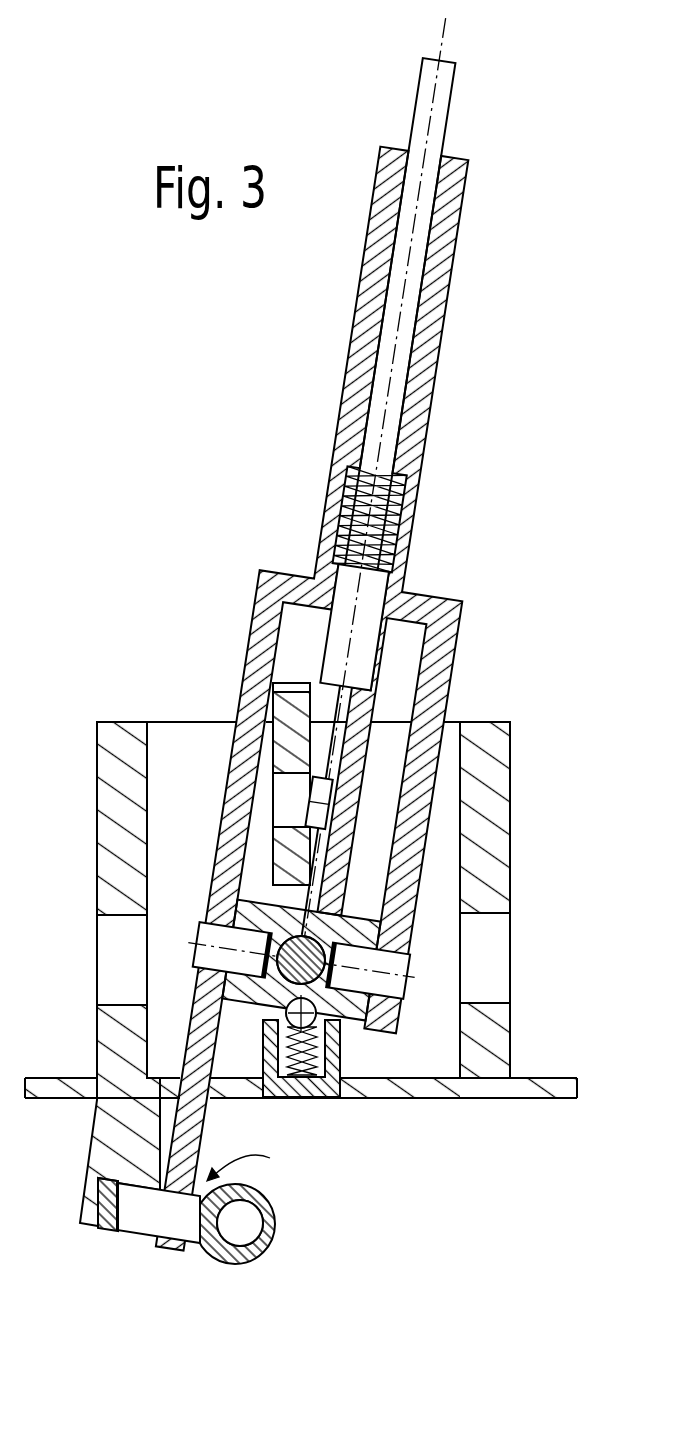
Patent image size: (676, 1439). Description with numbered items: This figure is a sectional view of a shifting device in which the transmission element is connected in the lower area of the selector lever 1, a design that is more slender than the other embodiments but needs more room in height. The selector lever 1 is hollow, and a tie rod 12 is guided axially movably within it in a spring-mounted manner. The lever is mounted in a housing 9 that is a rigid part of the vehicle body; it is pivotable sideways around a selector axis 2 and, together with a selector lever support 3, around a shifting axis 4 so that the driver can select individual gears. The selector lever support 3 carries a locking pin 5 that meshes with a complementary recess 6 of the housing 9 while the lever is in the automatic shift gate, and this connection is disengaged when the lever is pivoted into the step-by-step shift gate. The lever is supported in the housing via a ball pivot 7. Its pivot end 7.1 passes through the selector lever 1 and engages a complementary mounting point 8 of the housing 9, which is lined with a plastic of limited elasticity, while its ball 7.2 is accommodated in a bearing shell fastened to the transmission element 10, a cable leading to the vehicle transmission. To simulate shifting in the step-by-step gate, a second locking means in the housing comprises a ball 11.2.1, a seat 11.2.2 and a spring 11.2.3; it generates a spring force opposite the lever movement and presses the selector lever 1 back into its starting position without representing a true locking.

The selector lever 1 is at (428, 370).
The selector axis 2 is at (282, 980).
The selector lever support 3 is at (367, 931).
The shifting axis 4 is at (415, 978).
The locking pin 5 is at (313, 805).
The recess 6 is at (286, 799).
The ball pivot 7 is at (252, 1164).
The pivot end 7.1 is at (138, 1220).
The ball 7.2 is at (245, 1237).
The mounting point 8 is at (103, 1228).
The housing 9 is at (497, 1043).
The transmission element 10 is at (228, 1262).
The ball 11.2.1 is at (327, 1007).
The seat 11.2.2 is at (323, 1047).
The spring 11.2.3 is at (307, 1080).
The tie rod 12 is at (440, 103).